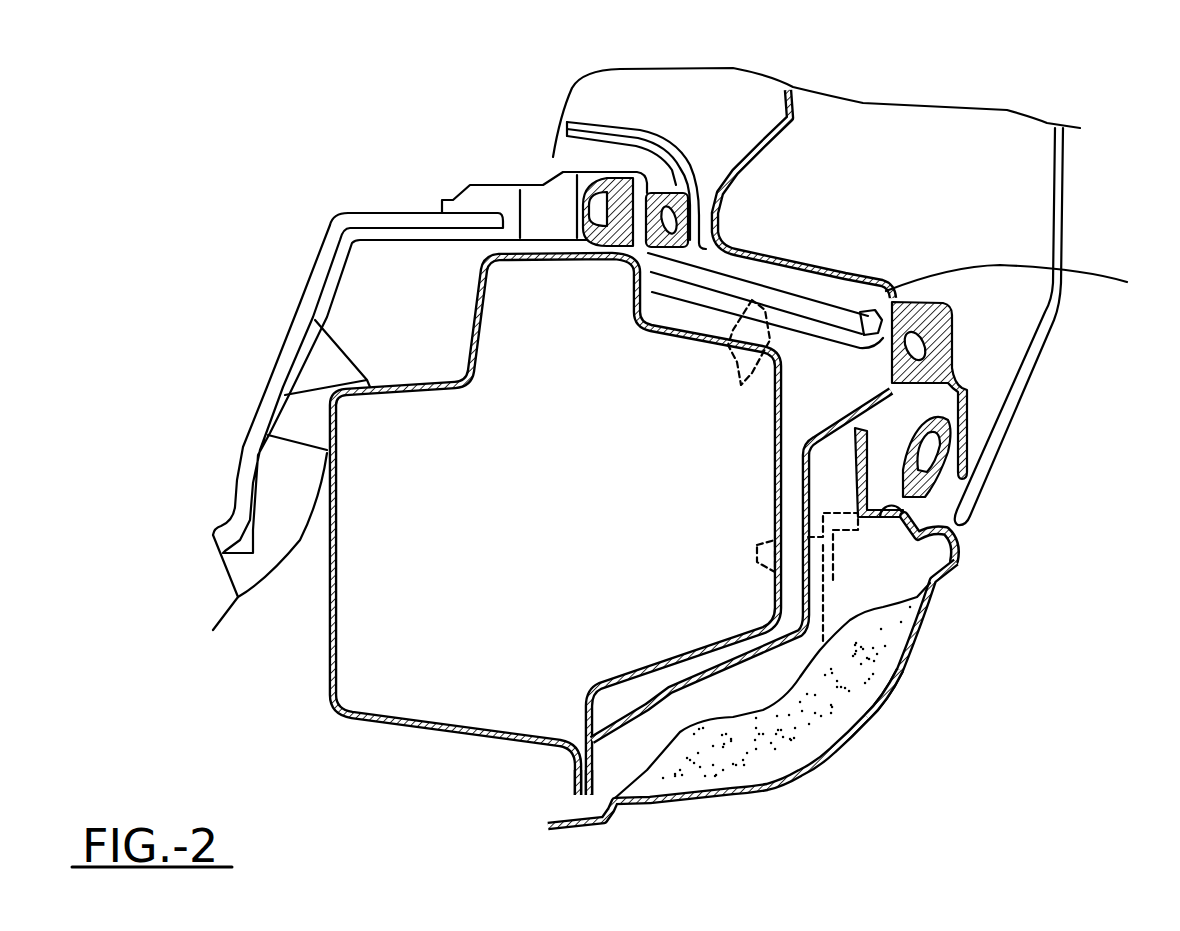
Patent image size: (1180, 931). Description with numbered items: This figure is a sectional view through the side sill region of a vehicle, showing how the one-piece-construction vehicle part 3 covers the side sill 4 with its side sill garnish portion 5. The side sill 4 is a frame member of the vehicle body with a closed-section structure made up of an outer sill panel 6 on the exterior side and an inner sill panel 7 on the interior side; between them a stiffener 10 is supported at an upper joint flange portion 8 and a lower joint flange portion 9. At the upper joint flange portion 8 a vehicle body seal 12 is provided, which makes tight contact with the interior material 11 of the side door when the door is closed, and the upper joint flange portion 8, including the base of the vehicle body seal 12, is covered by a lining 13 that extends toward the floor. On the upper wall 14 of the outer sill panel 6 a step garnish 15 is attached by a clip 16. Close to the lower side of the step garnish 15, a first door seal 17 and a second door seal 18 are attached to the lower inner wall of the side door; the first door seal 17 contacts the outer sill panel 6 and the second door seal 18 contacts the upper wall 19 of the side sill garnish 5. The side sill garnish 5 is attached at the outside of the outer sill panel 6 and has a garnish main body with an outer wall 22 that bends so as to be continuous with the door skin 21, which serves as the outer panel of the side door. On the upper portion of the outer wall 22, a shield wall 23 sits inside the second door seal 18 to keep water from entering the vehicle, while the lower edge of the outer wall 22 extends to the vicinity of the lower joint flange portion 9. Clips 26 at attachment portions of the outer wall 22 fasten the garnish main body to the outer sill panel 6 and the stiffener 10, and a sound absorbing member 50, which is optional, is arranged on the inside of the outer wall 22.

The one-piece-construction vehicle part 3 is at (308, 719).
The side sill 4 is at (331, 617).
The side sill garnish portion 5 is at (900, 672).
The outer sill panel 6 is at (893, 396).
The inner sill panel 7 is at (432, 396).
The upper joint flange portion 8 is at (643, 300).
The lower joint flange portion 9 is at (575, 774).
The stiffener 10 is at (776, 438).
The interior material 11 is at (583, 122).
The vehicle body seal 12 is at (672, 193).
The lining 13 is at (368, 212).
The upper wall 14 is at (1025, 280).
The step garnish 15 is at (800, 298).
The clip 16 is at (735, 368).
The first door seal 17 is at (952, 326).
The second door seal 18 is at (913, 503).
The upper wall 19 is at (927, 540).
The door skin 21 is at (1062, 194).
The outer wall 22 is at (868, 721).
The shield wall 23 is at (867, 443).
The clips 26 is at (765, 545).
The sound absorbing member 50 is at (737, 770).